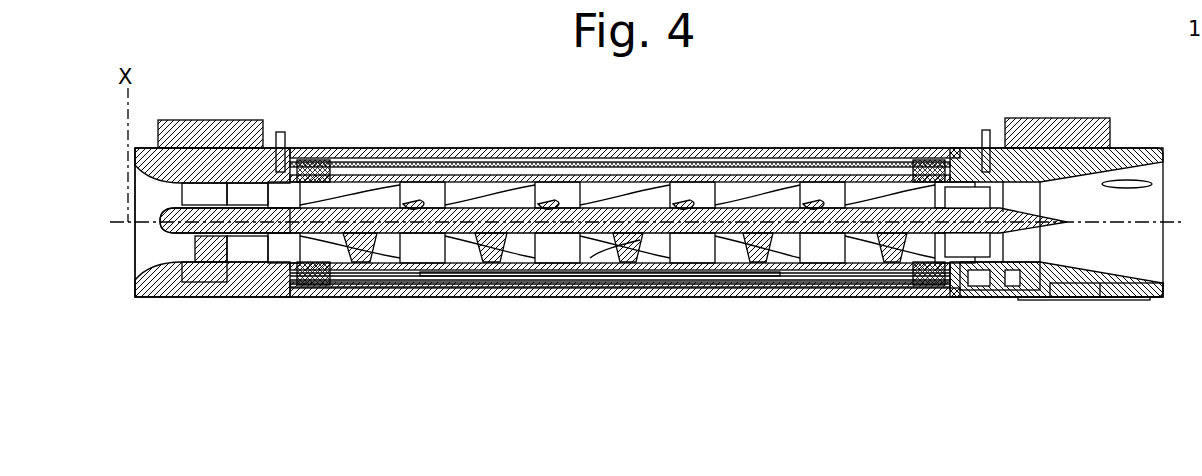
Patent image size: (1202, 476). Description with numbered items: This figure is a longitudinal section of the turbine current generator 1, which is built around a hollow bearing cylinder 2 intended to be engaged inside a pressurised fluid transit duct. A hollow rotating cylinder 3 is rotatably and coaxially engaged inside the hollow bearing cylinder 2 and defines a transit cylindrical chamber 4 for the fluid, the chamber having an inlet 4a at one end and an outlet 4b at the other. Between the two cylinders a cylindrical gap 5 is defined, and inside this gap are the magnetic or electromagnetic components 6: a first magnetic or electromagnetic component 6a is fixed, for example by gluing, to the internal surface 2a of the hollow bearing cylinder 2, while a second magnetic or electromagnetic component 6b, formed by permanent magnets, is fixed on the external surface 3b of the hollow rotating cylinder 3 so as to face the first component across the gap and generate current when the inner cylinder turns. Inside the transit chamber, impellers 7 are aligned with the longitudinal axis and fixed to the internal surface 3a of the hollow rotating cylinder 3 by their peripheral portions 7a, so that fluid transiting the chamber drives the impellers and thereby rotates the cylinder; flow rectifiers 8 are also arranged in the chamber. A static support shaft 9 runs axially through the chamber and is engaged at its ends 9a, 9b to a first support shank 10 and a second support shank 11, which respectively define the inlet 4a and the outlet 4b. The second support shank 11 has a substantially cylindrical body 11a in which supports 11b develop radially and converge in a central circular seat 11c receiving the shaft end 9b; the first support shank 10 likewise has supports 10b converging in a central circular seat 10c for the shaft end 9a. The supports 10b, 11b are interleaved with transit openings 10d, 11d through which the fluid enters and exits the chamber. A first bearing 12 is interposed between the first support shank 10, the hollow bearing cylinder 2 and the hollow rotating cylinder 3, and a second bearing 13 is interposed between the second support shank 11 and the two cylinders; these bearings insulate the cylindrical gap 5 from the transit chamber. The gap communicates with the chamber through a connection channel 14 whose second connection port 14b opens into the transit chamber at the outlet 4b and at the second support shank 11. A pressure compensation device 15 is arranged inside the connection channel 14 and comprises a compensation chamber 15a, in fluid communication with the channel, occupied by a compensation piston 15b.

The turbine current generator 1 is at (650, 220).
The hollow bearing cylinder 2 is at (341, 148).
The internal surface of the hollow bearing cylinder 2a is at (355, 296).
The hollow rotating cylinder 3 is at (366, 165).
The internal surface of the hollow rotating cylinder 3a is at (604, 183).
The external surface of the hollow rotating cylinder 3b is at (413, 163).
The transit cylindrical chamber 4 is at (337, 188).
The inlet of the transit cylindrical chamber 4a is at (268, 256).
The outlet of the transit cylindrical chamber 4b is at (1150, 296).
The cylindrical gap 5 is at (386, 161).
The magnetic or electromagnetic components 6 is at (480, 290).
The first magnetic or electromagnetic component 6a is at (573, 298).
The second magnetic or electromagnetic component 6b is at (536, 300).
The impeller 7 is at (490, 256).
The peripheral portions of the impeller 7a is at (638, 296).
The flow rectifier 8 is at (528, 193).
The static support shaft 9 is at (260, 200).
The first end of the static support shaft 9a is at (235, 242).
The second end of the static support shaft 9b is at (962, 262).
The first support shank 10 is at (140, 288).
The supports of the first support shank 10b is at (203, 193).
The central circular seat of the first support shank 10c is at (210, 233).
The transit openings of the first support shank 10d is at (208, 192).
The second support shank 11 is at (1128, 148).
The cylindrical body of the second support shank 11a is at (1135, 298).
The supports of the second support shank 11b is at (960, 198).
The central circular seat of the second support shank 11c is at (980, 217).
The transit openings of the second support shank 11d is at (977, 187).
The first bearing 12 is at (318, 296).
The second bearing 13 is at (935, 265).
The connection channel 14 is at (1050, 288).
The second connection port 14b is at (1133, 182).
The pressure compensation device 15 is at (1006, 292).
The compensation chamber 15a is at (1015, 298).
The compensation piston 15b is at (997, 294).